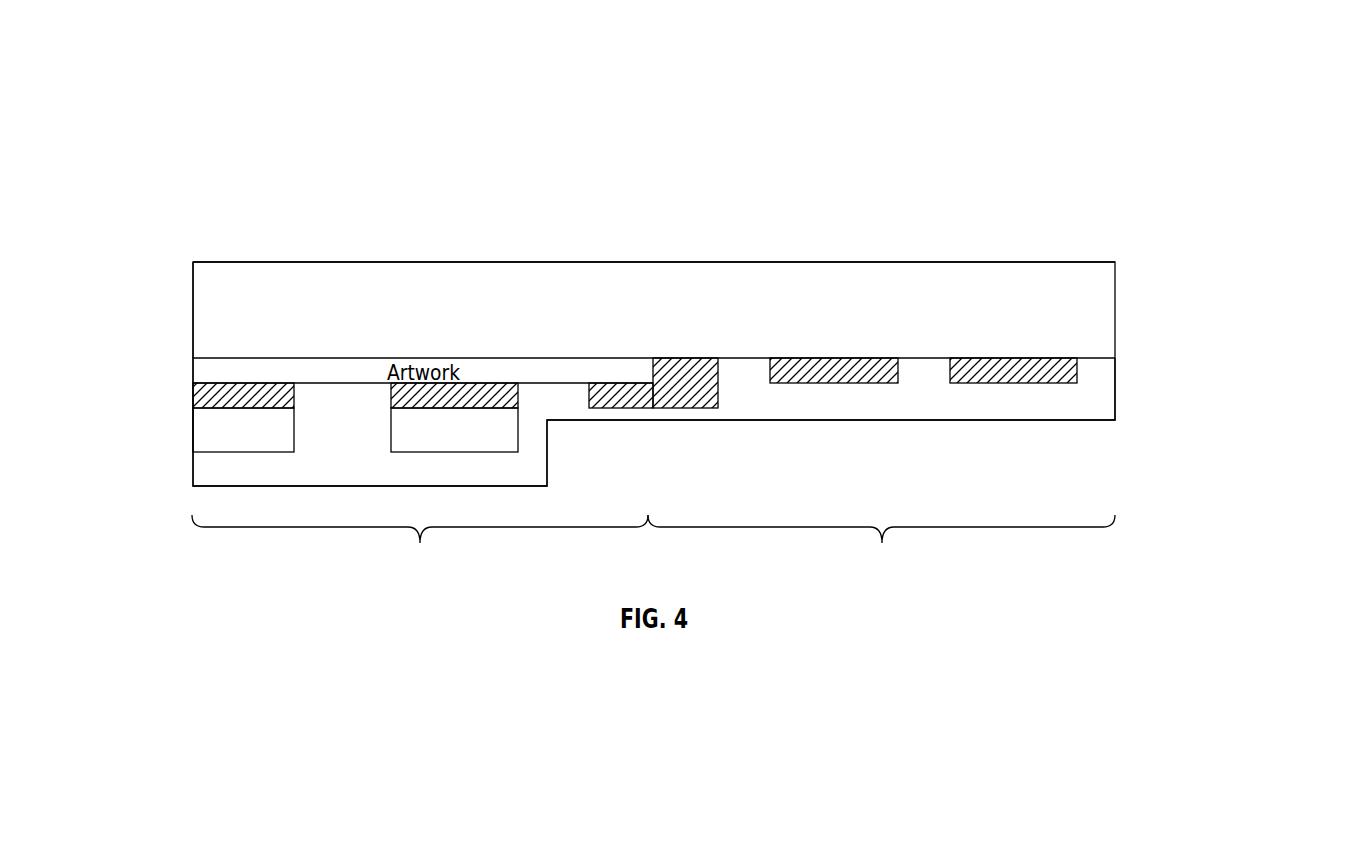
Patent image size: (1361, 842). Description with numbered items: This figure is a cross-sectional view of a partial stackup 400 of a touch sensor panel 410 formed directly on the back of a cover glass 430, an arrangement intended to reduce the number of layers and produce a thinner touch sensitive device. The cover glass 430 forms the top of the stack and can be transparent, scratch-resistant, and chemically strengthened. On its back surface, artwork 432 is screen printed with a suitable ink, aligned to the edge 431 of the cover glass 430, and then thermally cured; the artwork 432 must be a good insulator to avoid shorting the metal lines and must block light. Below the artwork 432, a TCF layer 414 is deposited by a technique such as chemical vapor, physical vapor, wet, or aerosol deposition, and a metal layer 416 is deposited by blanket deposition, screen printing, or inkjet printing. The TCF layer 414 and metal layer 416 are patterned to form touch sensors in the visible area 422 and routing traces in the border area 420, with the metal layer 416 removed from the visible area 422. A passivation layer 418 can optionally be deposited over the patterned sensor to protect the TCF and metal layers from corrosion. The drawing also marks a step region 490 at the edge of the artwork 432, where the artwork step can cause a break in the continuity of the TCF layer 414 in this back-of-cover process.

The partial stackup 400 is at (347, 160).
The touch sensor panel 410 is at (1145, 357).
The TCF layer 414 is at (195, 397).
The metal layer 416 is at (199, 430).
The passivation layer 418 is at (1057, 400).
The border area 420 is at (420, 560).
The visible area 422 is at (881, 560).
The cover glass 430 is at (826, 275).
The edge 431 is at (193, 285).
The artwork 432 is at (193, 365).
The step region 490 is at (654, 389).